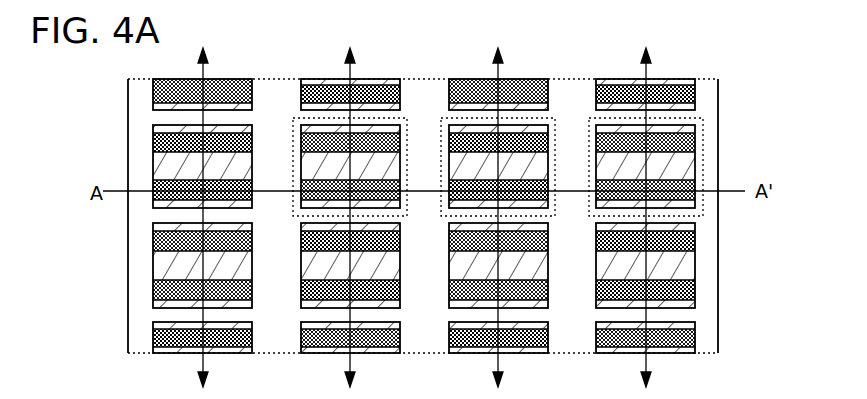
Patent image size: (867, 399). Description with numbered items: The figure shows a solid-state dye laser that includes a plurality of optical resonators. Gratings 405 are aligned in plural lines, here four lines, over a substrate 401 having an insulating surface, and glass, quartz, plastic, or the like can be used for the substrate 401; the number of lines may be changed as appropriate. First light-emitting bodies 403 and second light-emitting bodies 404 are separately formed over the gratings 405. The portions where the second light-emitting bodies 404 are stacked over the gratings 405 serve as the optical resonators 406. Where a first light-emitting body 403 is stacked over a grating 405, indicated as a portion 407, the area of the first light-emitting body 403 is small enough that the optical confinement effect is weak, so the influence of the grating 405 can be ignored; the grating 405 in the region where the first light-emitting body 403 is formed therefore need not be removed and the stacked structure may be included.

The substrate 401 is at (400, 216).
The first light-emitting body 403 is at (376, 191).
The second light-emitting body 404 is at (466, 193).
The grating 405 is at (376, 213).
The optical resonator 406 is at (545, 178).
The portion where the first light-emitting body is stacked over the grating 407 is at (516, 178).